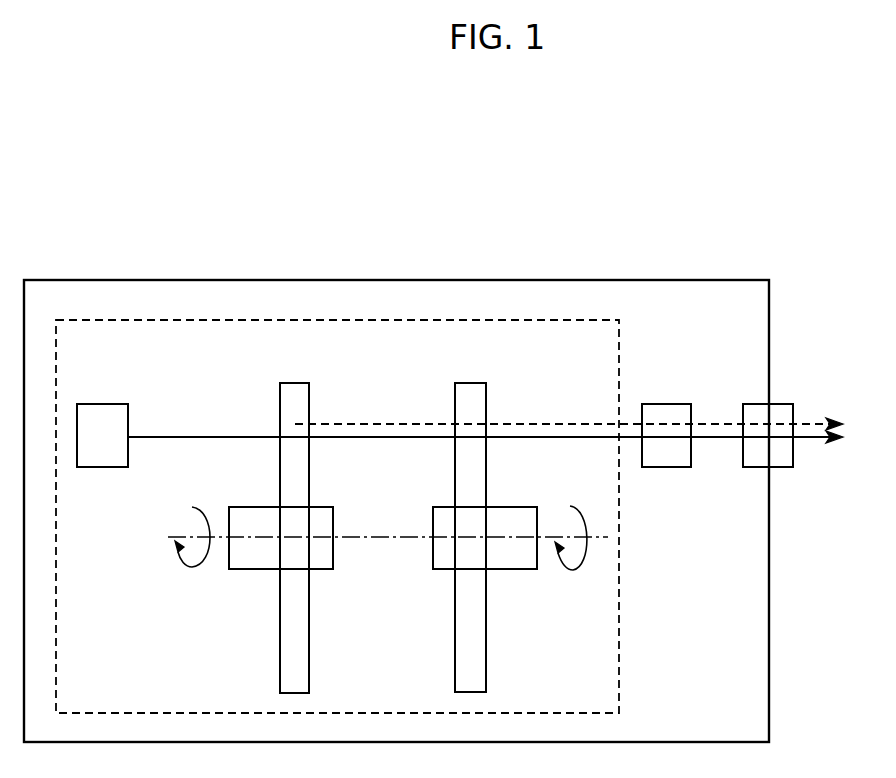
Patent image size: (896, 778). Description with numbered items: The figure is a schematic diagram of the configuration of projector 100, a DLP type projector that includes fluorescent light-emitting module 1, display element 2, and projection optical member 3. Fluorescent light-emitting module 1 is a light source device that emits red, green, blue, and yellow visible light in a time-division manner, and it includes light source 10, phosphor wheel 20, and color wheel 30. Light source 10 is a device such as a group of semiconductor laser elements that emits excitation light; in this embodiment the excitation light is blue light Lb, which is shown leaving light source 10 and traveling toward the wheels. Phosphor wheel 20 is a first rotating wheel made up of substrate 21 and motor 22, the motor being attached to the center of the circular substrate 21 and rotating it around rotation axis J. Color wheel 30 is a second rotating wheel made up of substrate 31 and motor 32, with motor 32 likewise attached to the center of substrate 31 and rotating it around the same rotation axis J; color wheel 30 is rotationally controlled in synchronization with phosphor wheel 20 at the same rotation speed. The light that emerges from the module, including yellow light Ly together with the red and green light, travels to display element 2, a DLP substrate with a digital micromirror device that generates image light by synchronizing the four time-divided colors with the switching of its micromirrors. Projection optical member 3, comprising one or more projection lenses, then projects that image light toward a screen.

The projector 100 is at (715, 280).
The fluorescent light-emitting module 1 is at (573, 320).
The light source 10 is at (104, 404).
The display element 2 is at (668, 404).
The projection optical member 3 is at (780, 404).
The phosphor wheel 20 is at (250, 538).
The substrate 21 is at (284, 636).
The motor 22 is at (255, 563).
The color wheel 30 is at (513, 537).
The substrate 31 is at (474, 630).
The motor 32 is at (509, 560).
The blue light Lb is at (185, 437).
The yellow light Ly is at (377, 402).
The rotation axis J is at (376, 538).